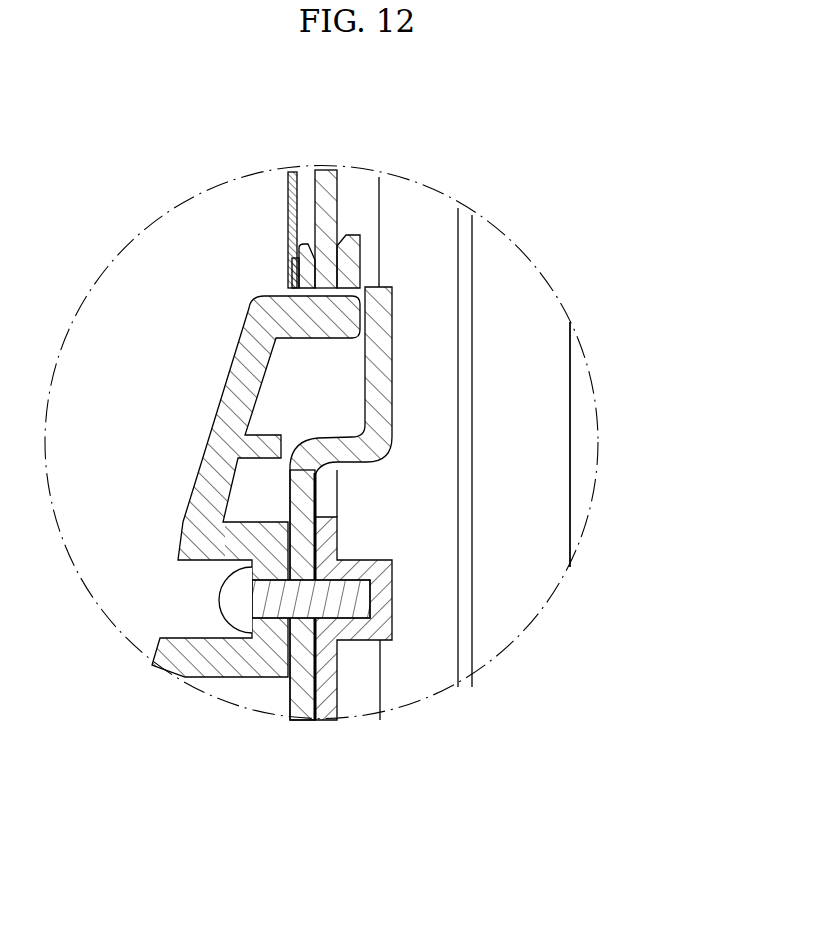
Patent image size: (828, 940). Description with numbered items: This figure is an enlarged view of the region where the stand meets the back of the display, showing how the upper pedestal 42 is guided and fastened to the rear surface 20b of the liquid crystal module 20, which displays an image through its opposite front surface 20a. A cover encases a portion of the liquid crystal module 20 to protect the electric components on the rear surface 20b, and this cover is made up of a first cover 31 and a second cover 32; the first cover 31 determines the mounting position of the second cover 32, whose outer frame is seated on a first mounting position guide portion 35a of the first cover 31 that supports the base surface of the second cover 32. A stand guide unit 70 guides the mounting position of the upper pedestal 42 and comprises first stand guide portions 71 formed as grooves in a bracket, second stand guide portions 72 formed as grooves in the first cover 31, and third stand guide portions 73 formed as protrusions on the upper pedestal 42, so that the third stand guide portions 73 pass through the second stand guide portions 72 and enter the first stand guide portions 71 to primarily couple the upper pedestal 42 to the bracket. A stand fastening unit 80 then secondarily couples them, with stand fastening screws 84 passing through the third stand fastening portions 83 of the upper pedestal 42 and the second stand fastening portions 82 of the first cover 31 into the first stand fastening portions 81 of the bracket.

The liquid crystal module 20 is at (571, 512).
The front surface 20a is at (571, 458).
The rear surface 20b is at (470, 571).
The first cover 31 is at (305, 512).
The second cover 32 is at (288, 210).
The first mounting position guide portion 35a is at (298, 262).
The upper pedestal 42 is at (208, 482).
The stand guide unit 70 is at (608, 232).
The first stand guide portion 71 is at (338, 268).
The second stand guide portion 72 is at (347, 410).
The third stand guide portion 73 is at (360, 236).
The stand fastening unit 80 is at (190, 815).
The first stand fastening portion 81 is at (360, 618).
The second stand fastening portion 82 is at (315, 618).
The third stand fastening portion 83 is at (267, 608).
The stand fastening screw 84 is at (240, 613).